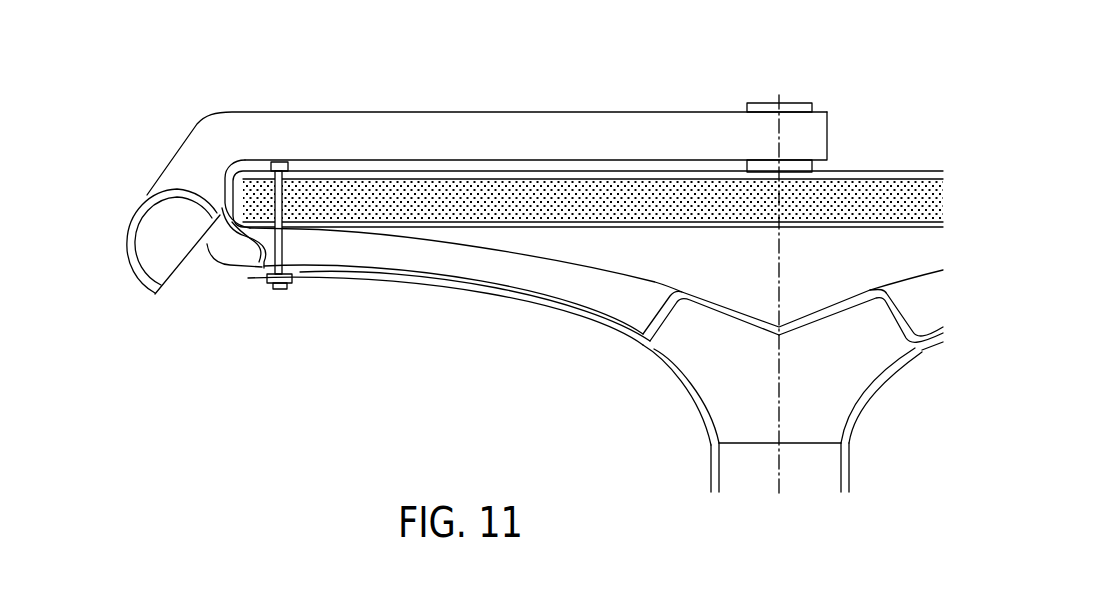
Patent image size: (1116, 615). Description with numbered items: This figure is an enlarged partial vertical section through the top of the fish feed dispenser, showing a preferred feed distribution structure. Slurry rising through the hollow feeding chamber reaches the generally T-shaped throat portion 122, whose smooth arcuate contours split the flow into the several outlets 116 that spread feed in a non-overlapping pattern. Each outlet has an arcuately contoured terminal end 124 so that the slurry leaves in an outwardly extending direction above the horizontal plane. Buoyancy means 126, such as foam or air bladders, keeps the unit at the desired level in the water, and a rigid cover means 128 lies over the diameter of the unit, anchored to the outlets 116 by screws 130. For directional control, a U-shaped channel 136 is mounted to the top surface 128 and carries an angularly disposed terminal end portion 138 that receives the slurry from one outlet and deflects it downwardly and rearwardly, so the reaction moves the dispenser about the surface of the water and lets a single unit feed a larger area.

The outlet 116 is at (503, 272).
The T-shaped throat portion 122 is at (706, 478).
The terminal end of the orifice 124 is at (240, 275).
The buoyancy means 126 is at (857, 198).
The cover means 128 is at (843, 171).
The screw 130 is at (290, 284).
The U-shaped channel 136 is at (428, 112).
The terminal end portion 138 is at (143, 202).